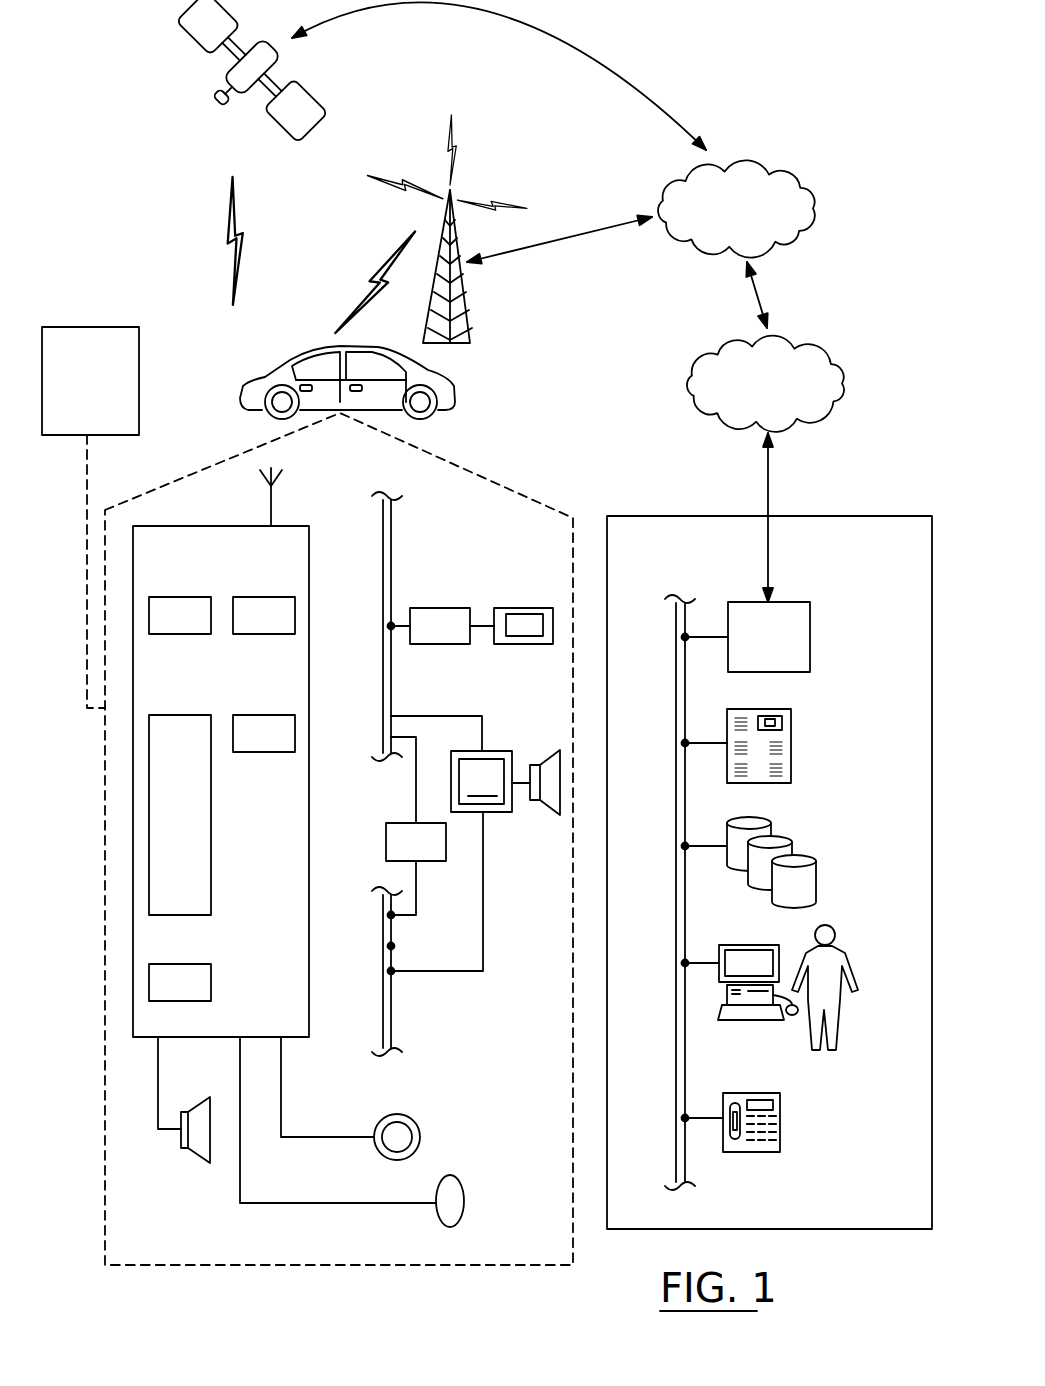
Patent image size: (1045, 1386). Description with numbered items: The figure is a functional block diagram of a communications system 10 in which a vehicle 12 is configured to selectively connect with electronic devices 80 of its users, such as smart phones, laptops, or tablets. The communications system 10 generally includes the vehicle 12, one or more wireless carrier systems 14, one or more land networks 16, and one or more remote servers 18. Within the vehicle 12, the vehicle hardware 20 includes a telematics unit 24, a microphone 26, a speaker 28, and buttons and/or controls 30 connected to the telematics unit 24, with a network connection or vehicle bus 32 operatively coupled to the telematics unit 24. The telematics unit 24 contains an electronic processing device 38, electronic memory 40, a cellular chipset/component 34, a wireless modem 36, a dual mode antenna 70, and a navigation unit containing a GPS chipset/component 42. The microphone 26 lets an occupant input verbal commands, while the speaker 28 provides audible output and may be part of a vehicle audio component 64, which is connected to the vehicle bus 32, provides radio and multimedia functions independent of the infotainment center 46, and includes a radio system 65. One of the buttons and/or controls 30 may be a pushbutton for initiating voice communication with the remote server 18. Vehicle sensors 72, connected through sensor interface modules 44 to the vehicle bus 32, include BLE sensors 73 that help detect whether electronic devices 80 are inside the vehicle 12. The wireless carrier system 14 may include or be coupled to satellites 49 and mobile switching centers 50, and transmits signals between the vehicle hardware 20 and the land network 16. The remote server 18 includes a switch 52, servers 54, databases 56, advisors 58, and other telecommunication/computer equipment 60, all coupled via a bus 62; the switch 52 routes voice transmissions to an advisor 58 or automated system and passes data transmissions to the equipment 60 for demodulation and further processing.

The communications system 10 is at (157, 100).
The vehicle 12 is at (312, 345).
The wireless carrier system 14 is at (779, 148).
The land network 16 is at (818, 348).
The remote server 18 is at (818, 516).
The vehicle hardware 20 is at (486, 470).
The telematics unit 24 is at (310, 877).
The microphone 26 is at (450, 1176).
The speaker 28 is at (208, 1162).
The buttons and/or controls 30 is at (400, 1113).
The vehicle bus 32 is at (392, 690).
The cellular chipset/component 34 is at (157, 598).
The wireless modem 36 is at (246, 598).
The electronic processing device 38 is at (157, 716).
The electronic memory 40 is at (212, 978).
The GPS chipset/component 42 is at (246, 716).
The sensor interface module 44 is at (430, 608).
The infotainment center 46 is at (410, 823).
The satellite 49 is at (268, 57).
The mobile switching center 50 is at (806, 188).
The switch 52 is at (800, 602).
The server 54 is at (792, 740).
The database 56 is at (812, 860).
The advisor 58 is at (835, 945).
The telecommunication/computer equipment 60 is at (781, 1103).
The bus 62 is at (383, 1015).
The audio component 64 is at (492, 814).
The radio system 65 is at (481, 781).
The dual mode antenna 70 is at (272, 510).
The vehicle sensors 72 is at (507, 608).
The BLE sensors 73 is at (518, 630).
The electronic device 80 is at (86, 327).